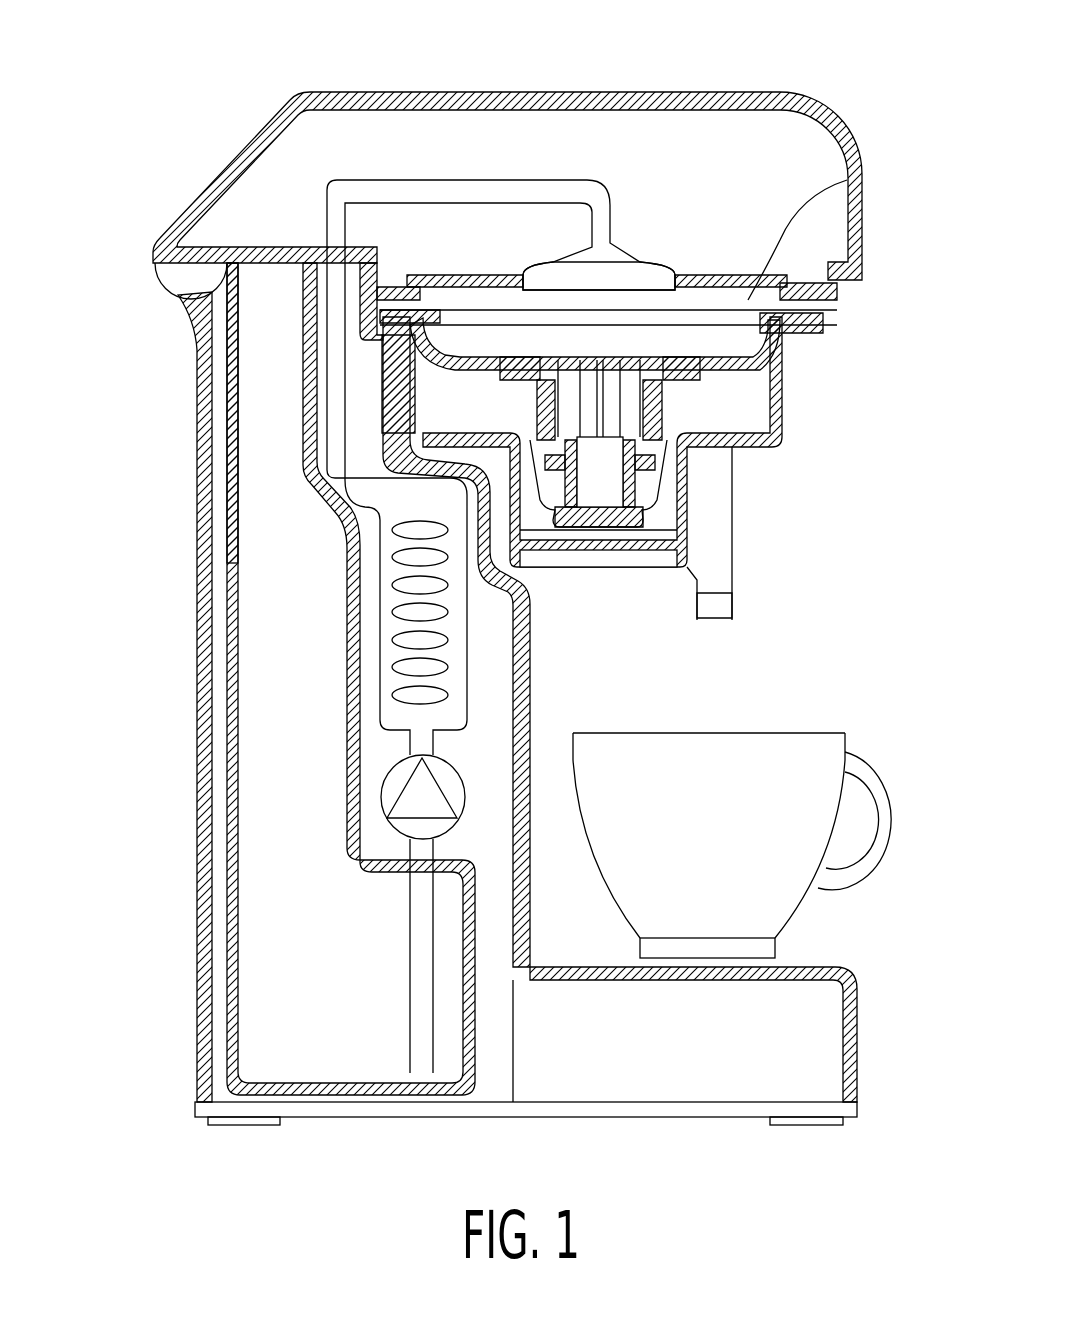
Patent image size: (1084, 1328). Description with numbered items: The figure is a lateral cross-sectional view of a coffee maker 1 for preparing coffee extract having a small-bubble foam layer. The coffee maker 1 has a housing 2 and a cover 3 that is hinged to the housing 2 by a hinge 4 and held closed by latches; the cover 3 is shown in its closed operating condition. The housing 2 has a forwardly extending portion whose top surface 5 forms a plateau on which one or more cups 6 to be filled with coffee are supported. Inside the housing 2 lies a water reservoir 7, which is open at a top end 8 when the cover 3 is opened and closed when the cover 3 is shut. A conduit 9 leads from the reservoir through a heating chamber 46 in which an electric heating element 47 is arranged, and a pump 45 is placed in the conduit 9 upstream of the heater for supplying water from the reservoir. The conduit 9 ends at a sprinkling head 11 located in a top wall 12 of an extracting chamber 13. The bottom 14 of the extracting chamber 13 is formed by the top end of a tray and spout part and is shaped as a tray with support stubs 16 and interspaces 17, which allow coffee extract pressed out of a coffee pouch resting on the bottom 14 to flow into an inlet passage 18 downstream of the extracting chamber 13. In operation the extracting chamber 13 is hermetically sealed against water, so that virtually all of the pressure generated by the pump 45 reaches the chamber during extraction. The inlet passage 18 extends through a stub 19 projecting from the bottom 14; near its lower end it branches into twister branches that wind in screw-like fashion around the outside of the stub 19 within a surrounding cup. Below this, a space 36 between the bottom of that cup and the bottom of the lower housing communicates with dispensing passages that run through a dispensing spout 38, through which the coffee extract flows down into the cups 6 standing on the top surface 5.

The coffee maker 1 is at (263, 95).
The housing 2 is at (185, 610).
The cover 3 is at (539, 88).
The hinge 4 is at (190, 270).
The top surface 5 is at (805, 960).
The cup 6 is at (850, 725).
The water reservoir 7 is at (228, 952).
The top end 8 is at (245, 277).
The conduit 9 is at (330, 505).
The sprinkling head 11 is at (648, 262).
The top wall 12 is at (720, 277).
The extracting chamber 13 is at (748, 300).
The bottom 14 is at (782, 370).
The support stubs 16 is at (777, 402).
The interspaces 17 is at (862, 180).
The inlet passage 18 is at (578, 493).
The stub 19 is at (760, 442).
The space 36 is at (642, 533).
The dispensing spout 38 is at (732, 604).
The pump 45 is at (382, 795).
The heating chamber 46 is at (470, 660).
The electric heating element 47 is at (462, 628).